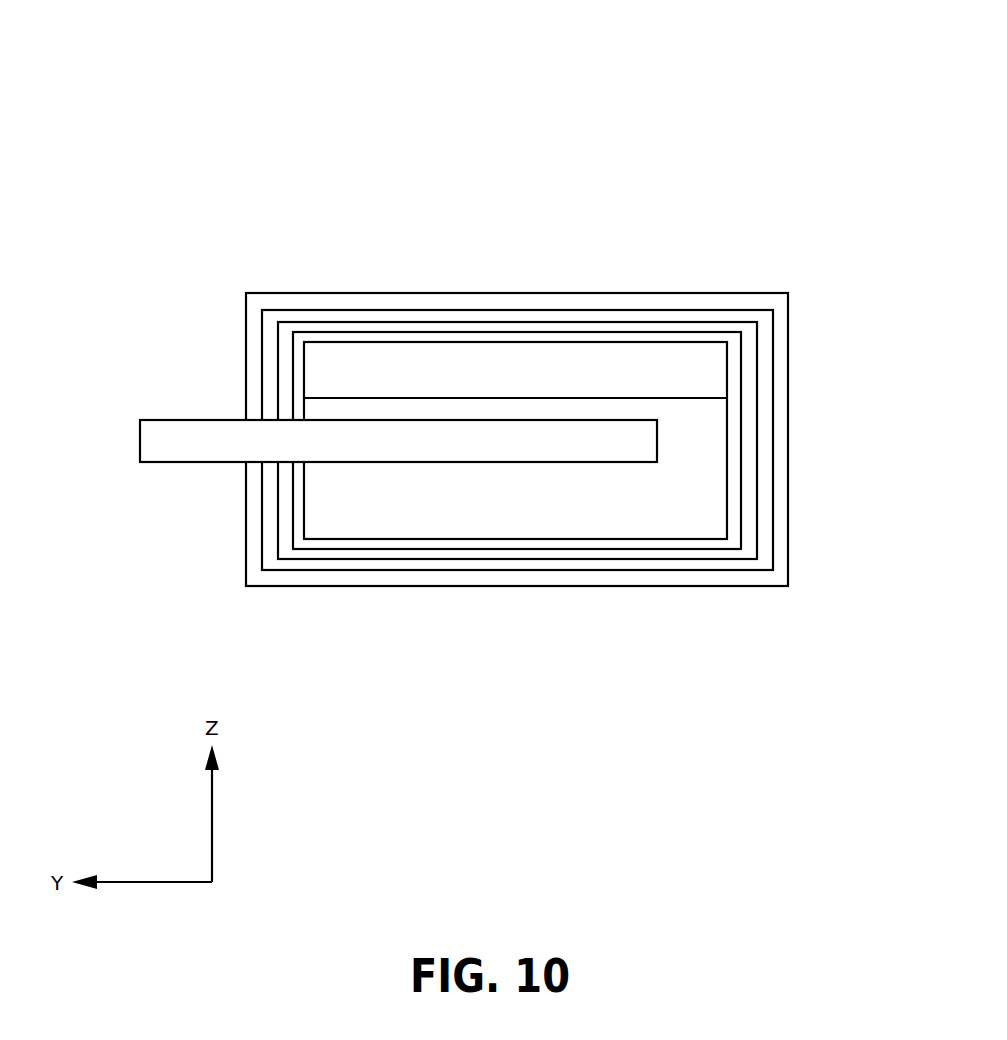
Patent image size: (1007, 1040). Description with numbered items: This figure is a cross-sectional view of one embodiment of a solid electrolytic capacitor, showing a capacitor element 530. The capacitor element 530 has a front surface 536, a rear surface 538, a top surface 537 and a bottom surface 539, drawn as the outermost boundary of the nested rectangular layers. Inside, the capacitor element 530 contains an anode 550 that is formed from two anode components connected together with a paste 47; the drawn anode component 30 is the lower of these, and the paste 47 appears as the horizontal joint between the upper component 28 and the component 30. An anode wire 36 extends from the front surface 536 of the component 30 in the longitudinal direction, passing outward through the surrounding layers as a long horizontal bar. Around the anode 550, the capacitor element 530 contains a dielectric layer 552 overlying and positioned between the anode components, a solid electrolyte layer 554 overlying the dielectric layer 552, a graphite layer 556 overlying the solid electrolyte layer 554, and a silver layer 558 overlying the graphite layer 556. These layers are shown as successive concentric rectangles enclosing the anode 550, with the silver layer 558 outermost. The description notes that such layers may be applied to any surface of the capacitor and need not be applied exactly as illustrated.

The capacitor element 530 is at (427, 118).
The top plate 28 is at (323, 373).
The anode component 30 is at (358, 515).
The anode wire 36 is at (511, 440).
The paste 47 is at (542, 397).
The front surface 536 is at (246, 525).
The top surface 537 is at (532, 293).
The rear surface 538 is at (788, 435).
The bottom surface 539 is at (525, 588).
The anode 550 is at (656, 365).
The dielectric layer 552 is at (735, 348).
The solid electrolyte layer 554 is at (746, 387).
The graphite layer 556 is at (762, 526).
The silver layer 558 is at (783, 563).